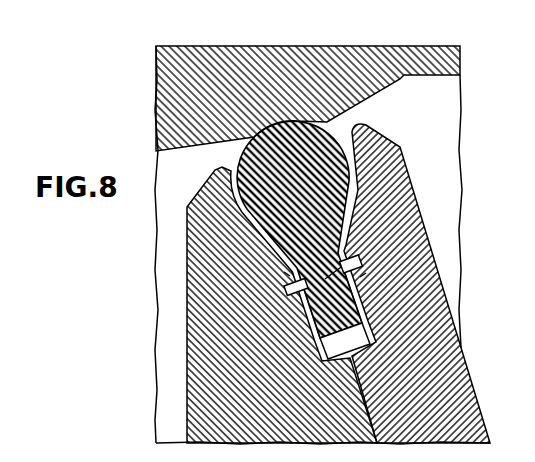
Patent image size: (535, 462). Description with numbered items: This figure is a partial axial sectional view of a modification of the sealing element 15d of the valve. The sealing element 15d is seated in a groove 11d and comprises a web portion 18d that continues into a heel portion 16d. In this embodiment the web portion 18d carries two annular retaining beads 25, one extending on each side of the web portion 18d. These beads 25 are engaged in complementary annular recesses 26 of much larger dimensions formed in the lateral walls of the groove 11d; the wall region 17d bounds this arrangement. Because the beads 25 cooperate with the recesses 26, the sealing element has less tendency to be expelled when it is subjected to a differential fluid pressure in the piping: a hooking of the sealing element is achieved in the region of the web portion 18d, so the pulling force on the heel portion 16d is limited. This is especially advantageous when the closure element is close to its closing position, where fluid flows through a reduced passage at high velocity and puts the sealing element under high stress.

The sealing element 15d is at (249, 131).
The groove 11d is at (298, 138).
The clamping jaw 17d is at (337, 121).
The heel portion 16d is at (352, 305).
The web portion 18d is at (353, 289).
The annular retaining beads 25 is at (284, 295).
The annular recesses 26 is at (283, 272).